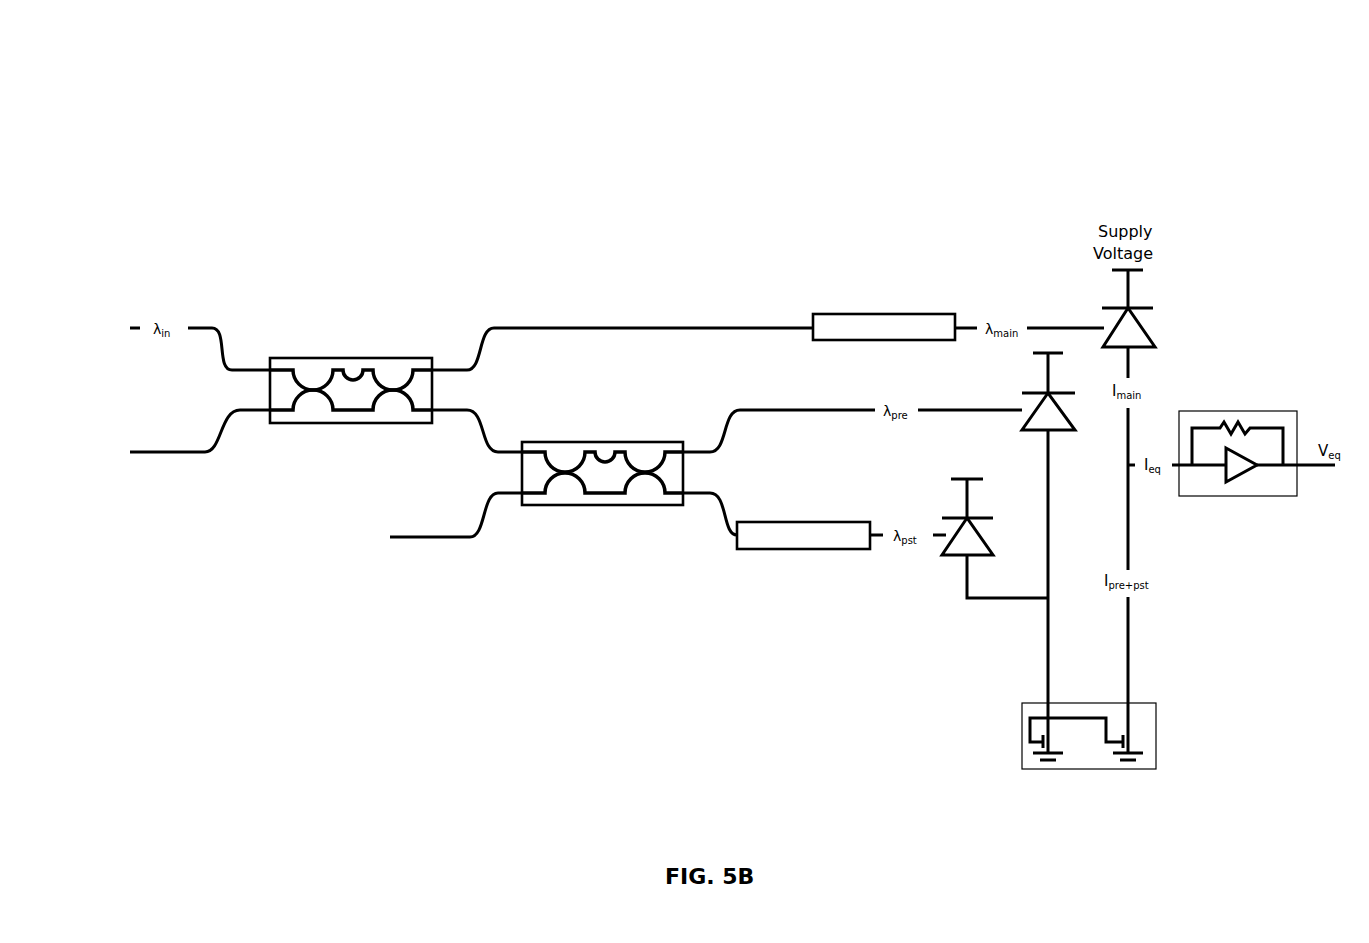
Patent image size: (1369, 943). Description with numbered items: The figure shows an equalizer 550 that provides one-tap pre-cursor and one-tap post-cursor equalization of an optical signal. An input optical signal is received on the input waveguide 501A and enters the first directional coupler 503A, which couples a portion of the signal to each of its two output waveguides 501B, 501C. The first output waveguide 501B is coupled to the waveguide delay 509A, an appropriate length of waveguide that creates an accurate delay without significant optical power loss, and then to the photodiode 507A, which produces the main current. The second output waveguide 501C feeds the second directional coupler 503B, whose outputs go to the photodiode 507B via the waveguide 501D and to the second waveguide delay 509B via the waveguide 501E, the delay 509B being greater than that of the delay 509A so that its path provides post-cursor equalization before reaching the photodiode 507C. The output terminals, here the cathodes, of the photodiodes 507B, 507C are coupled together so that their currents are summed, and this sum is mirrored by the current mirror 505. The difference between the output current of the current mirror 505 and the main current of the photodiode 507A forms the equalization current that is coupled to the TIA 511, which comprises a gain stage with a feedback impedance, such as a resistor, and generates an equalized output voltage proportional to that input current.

The equalizer 550 is at (350, 142).
The input waveguide 501A is at (193, 327).
The output waveguide 501B is at (775, 327).
The output waveguide 501C is at (485, 420).
The waveguide 501D is at (744, 409).
The waveguide 501E is at (727, 500).
The first directional coupler 503A is at (340, 357).
The second directional coupler 503B is at (603, 441).
The waveguide delay 509A is at (858, 313).
The waveguide delay 509B is at (781, 521).
The photodiode 507A is at (1155, 338).
The photodiode 507B is at (1063, 437).
The photodiode 507C is at (940, 517).
The current mirror 505 is at (1085, 771).
The TIA 511 is at (1241, 410).